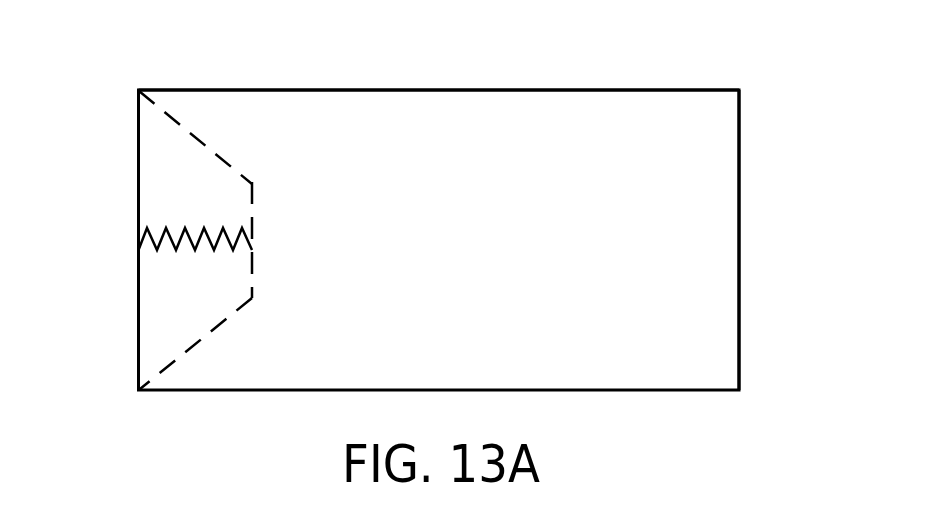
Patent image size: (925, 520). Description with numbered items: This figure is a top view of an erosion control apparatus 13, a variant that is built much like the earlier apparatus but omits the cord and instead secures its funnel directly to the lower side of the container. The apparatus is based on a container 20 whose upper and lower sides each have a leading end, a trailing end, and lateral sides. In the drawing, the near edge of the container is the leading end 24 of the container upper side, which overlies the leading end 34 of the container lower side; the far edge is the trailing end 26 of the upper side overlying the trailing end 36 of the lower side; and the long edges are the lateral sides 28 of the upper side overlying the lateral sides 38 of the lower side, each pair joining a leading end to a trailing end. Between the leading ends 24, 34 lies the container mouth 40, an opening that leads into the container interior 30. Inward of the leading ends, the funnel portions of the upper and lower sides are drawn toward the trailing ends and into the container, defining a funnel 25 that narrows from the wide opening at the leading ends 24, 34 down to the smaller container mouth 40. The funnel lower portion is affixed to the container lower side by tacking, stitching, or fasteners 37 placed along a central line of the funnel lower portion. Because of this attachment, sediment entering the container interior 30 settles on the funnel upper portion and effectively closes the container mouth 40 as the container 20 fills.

The erosion control apparatus 13 is at (82, 44).
The container 20 is at (800, 90).
The leading end 24 is at (88, 240).
The leading end 34 is at (138, 175).
The trailing end 26 is at (778, 240).
The trailing end 36 is at (739, 236).
The lateral sides 28 is at (439, 62).
The lateral sides 38 is at (432, 90).
The container interior 30 is at (475, 252).
The funnel 25 is at (188, 302).
The fasteners 37 is at (165, 229).
The container mouth 40 is at (253, 198).